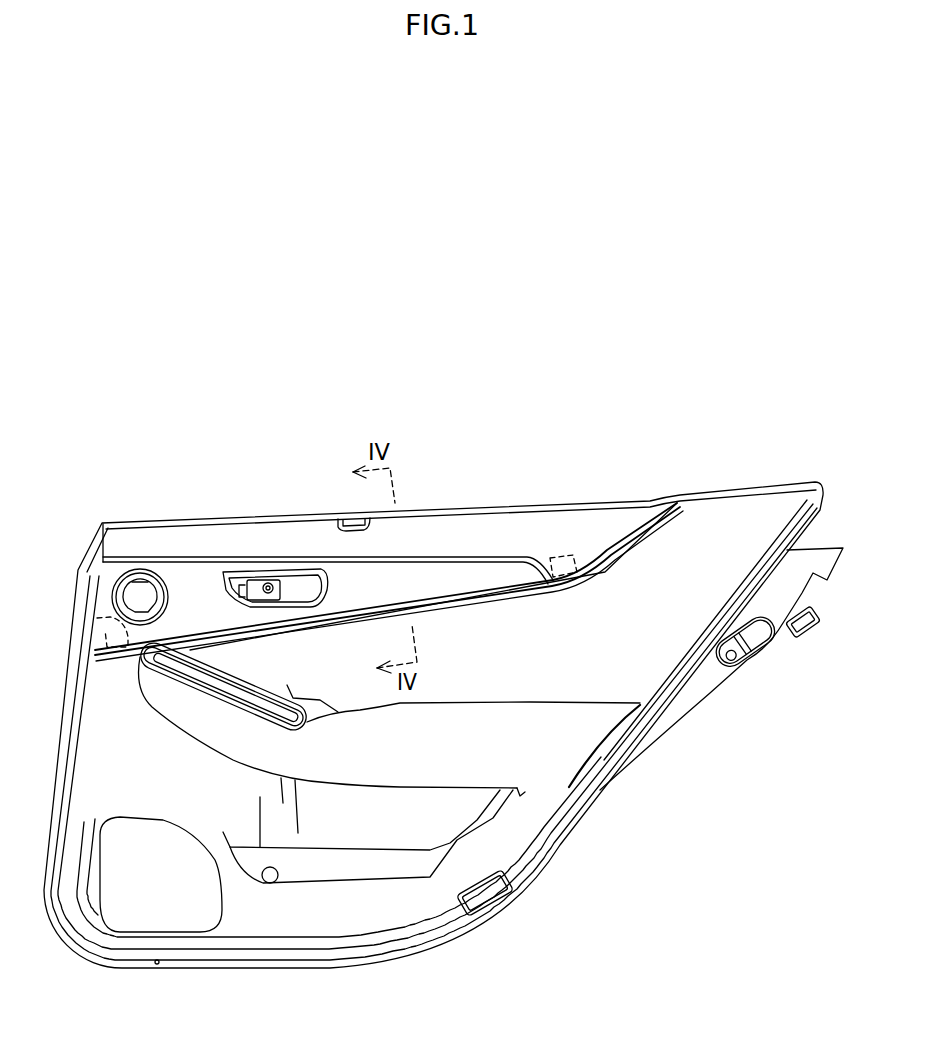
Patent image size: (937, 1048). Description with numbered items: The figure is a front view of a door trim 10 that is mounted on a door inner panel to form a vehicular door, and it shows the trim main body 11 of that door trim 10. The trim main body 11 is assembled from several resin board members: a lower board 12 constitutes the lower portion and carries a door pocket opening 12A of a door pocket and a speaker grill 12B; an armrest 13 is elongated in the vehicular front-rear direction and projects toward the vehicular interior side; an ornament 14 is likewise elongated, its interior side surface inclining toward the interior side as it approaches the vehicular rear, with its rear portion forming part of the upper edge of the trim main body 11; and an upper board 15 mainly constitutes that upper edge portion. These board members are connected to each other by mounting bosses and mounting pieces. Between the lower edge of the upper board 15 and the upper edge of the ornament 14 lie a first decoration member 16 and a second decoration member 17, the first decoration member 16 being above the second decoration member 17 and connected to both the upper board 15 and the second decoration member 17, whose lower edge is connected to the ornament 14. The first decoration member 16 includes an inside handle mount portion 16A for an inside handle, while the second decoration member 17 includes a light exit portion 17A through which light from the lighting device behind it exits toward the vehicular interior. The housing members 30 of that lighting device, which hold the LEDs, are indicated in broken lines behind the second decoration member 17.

The door trim 10 is at (758, 450).
The trim main body 11 is at (767, 731).
The lower board 12 is at (525, 840).
The door pocket opening 12A is at (278, 884).
The speaker grill 12B is at (172, 903).
The armrest 13 is at (537, 773).
The ornament 14 is at (572, 683).
The upper board 15 is at (602, 537).
The first decoration member 16 is at (197, 588).
The inside handle mount portion 16A is at (252, 578).
The second decoration member 17 is at (187, 640).
The light exit portion 17A is at (340, 615).
The housing member 30 is at (561, 555).